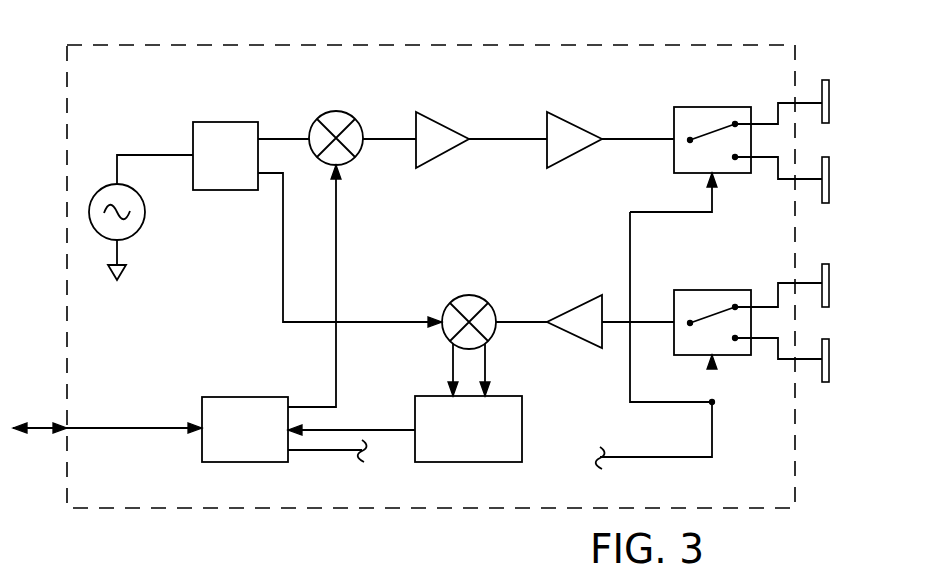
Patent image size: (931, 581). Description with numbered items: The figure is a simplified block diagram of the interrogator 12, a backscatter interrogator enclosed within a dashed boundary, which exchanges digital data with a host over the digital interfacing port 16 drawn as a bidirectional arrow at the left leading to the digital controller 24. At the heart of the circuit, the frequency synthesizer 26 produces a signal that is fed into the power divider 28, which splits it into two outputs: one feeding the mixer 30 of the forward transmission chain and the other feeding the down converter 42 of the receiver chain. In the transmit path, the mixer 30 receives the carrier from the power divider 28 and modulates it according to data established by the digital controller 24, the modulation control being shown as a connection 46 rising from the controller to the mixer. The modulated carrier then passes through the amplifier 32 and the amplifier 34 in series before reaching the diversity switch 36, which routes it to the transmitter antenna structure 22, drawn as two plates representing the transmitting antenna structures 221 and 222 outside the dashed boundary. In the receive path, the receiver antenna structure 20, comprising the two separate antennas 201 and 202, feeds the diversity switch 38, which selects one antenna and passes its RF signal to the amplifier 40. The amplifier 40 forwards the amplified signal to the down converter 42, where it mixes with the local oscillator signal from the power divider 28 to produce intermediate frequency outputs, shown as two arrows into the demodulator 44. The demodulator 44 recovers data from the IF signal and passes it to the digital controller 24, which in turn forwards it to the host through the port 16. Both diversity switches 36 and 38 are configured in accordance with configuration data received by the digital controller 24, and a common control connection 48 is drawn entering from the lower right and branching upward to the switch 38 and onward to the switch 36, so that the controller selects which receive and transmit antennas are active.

The interrogator 12 is at (184, 45).
The digital interfacing port 16 is at (46, 426).
The receiver antenna structure 20 is at (858, 323).
The receive antenna 201 is at (830, 284).
The receive antenna 202 is at (830, 358).
The transmitter antenna structure 22 is at (858, 141).
The transmitting antenna structure 221 is at (830, 100).
The transmitting antenna structure 222 is at (830, 178).
The digital controller 24 is at (254, 397).
The frequency synthesizer 26 is at (137, 228).
The power divider 28 is at (232, 122).
The mixer 30 is at (353, 158).
The amplifier 32 is at (444, 126).
The amplifier 34 is at (576, 126).
The diversity switch 36 is at (725, 107).
The diversity switch 38 is at (725, 290).
The amplifier 40 is at (576, 304).
The down converter 42 is at (455, 299).
The demodulator 44 is at (434, 396).
The modulation control line 46 is at (337, 249).
The switch control line 48 is at (670, 457).